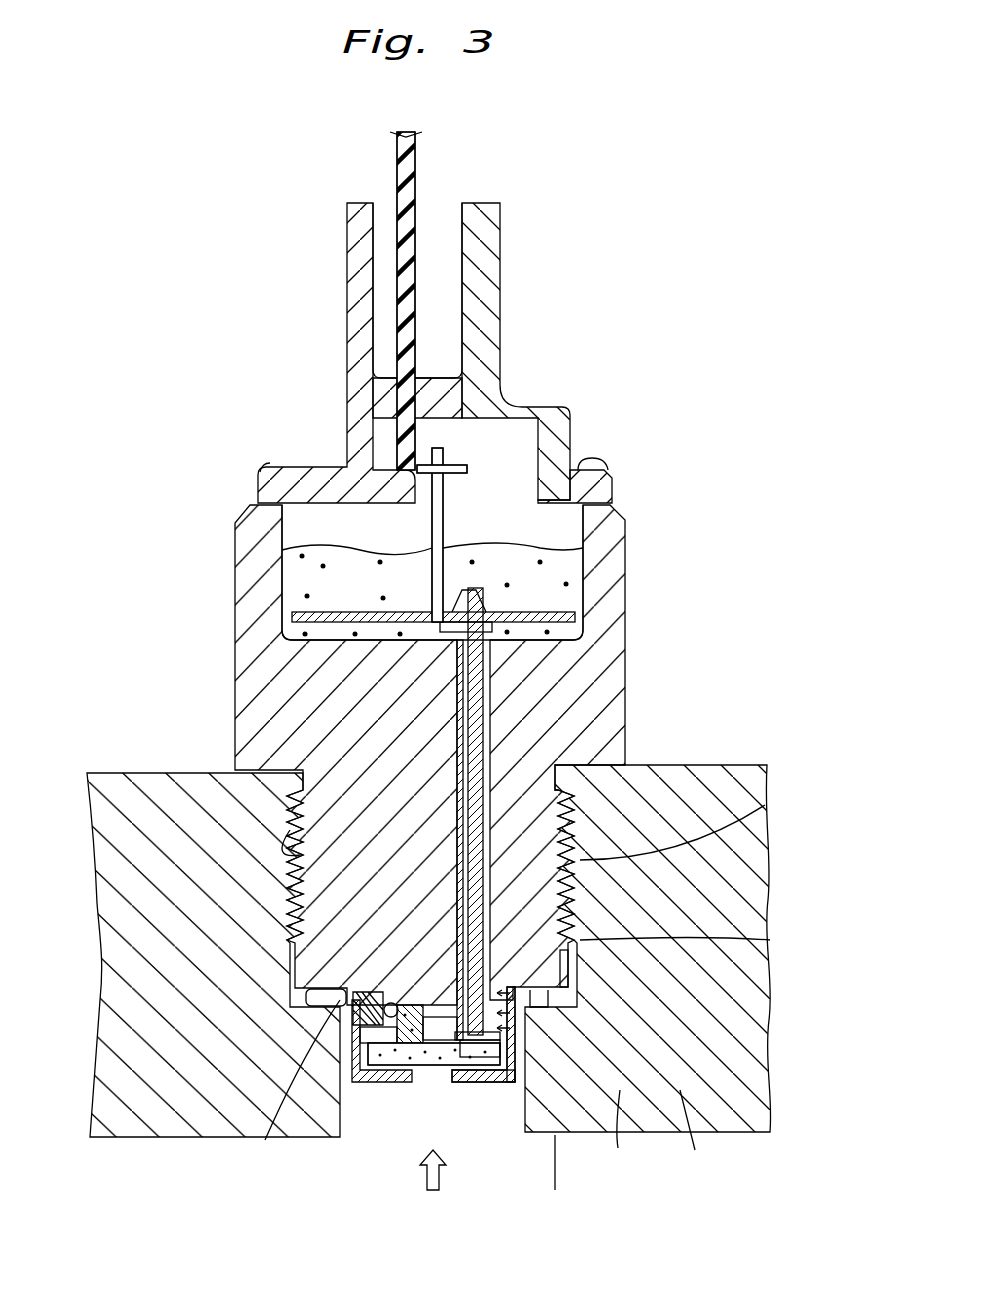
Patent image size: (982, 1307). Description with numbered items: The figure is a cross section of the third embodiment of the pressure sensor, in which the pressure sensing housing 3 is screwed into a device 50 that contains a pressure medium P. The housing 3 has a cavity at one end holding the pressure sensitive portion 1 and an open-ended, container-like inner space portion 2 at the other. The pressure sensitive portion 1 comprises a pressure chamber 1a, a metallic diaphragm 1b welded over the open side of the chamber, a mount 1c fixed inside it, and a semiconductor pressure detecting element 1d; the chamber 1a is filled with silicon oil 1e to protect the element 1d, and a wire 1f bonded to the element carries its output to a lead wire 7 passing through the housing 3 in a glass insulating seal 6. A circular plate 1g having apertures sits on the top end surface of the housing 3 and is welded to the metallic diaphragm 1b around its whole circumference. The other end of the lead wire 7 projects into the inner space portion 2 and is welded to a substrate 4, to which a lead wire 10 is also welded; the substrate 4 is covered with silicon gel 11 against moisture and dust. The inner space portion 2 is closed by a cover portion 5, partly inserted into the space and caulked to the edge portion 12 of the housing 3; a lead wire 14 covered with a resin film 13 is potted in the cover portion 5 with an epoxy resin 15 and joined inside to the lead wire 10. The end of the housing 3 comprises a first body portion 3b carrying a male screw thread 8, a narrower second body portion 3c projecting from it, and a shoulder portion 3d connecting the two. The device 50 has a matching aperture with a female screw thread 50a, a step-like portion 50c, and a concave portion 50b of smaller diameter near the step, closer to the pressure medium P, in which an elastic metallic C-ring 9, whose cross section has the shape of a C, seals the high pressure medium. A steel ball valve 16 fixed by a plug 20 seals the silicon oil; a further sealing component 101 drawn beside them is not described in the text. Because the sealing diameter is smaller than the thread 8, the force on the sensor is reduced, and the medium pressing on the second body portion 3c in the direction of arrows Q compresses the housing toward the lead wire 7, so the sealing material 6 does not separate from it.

The pressure sensitive portion 1 is at (417, 1099).
The pressure chamber 1a is at (372, 1082).
The metallic diaphragm 1b is at (448, 1065).
The mount 1c is at (398, 1078).
The semiconductor pressure detecting element 1d is at (432, 1070).
The silicon oil 1e is at (490, 1085).
The wire 1f is at (470, 1084).
The circular plate having apertures 1g is at (510, 1085).
The inner space portion 2 is at (565, 522).
The housing 3 is at (612, 678).
The first body portion 3b is at (770, 940).
The second body portion 3c is at (265, 1140).
The shoulder portion 3d is at (568, 968).
The substrate 4 is at (590, 612).
The cover portion 5 is at (500, 265).
The insulating seal 6 is at (460, 755).
The lead wire 7 is at (468, 700).
The screw thread 8 is at (270, 835).
The C-ring 9 is at (618, 1139).
The lead wire 10 is at (520, 472).
The silicon gel 11 is at (290, 570).
The edge portion 12 is at (600, 468).
The film 13 is at (416, 140).
The lead wire 14 is at (455, 452).
The epoxy resin 15 is at (445, 205).
The steel ball valve 16 is at (365, 1025).
The plug 20 is at (340, 1007).
The device 50 is at (745, 1068).
The screw thread 50a is at (765, 805).
The concave portion 50b is at (575, 1180).
The step-like portion 50c is at (714, 1139).
The ball 101 is at (385, 1017).
The pressure medium P is at (433, 1193).
The arrows Q is at (490, 745).
The C shape C is at (430, 993).